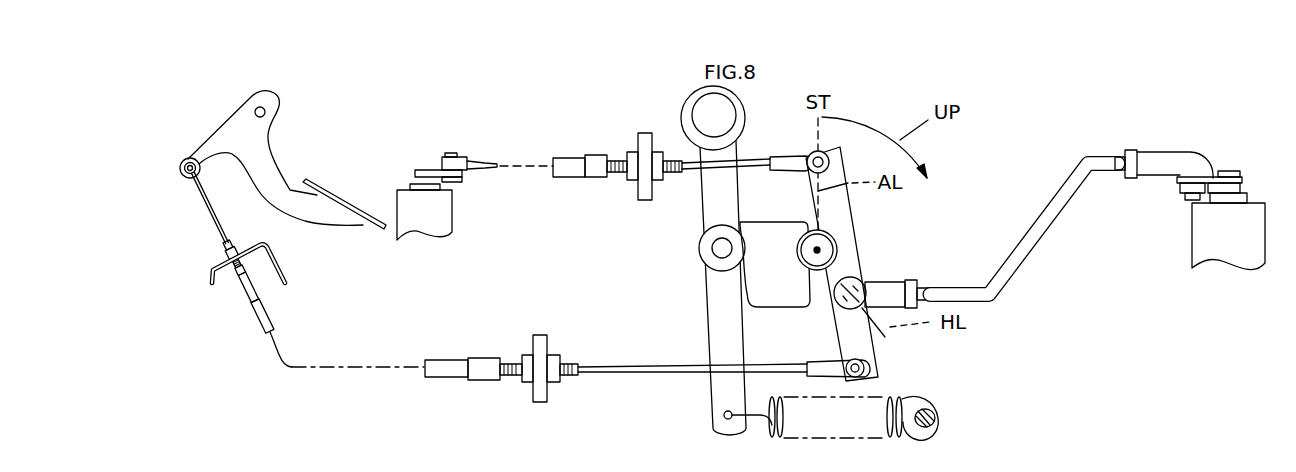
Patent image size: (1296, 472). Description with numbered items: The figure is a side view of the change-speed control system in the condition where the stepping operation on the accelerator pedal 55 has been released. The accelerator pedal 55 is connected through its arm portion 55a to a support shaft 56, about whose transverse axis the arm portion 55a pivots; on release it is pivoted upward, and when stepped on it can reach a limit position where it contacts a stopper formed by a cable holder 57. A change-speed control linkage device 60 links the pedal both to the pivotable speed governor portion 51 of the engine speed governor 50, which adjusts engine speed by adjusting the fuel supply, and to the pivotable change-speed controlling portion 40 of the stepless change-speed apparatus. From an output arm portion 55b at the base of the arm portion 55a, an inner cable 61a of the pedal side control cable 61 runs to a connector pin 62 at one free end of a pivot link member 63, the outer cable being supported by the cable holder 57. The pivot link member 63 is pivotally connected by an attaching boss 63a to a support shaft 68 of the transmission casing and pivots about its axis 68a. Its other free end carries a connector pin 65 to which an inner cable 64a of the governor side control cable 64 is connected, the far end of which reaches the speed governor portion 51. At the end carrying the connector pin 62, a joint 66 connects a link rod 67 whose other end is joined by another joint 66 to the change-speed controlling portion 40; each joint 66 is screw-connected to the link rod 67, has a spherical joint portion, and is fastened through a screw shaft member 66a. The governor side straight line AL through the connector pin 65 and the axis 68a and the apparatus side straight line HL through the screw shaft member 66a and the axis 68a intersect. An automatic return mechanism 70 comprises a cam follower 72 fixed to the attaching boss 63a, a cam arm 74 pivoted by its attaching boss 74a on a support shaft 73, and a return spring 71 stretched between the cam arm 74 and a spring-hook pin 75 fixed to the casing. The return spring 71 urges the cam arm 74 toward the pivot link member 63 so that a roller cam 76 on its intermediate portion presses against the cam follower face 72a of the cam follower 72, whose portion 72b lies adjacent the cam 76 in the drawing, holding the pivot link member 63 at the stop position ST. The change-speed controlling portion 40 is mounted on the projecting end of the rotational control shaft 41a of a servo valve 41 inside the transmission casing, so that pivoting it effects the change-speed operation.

The change-speed controlling portion 40 is at (1215, 177).
The servo valve 41 is at (1198, 255).
The rotational control shaft 41a is at (1230, 173).
The engine speed governor 50 is at (450, 218).
The speed governor portion 51 is at (438, 168).
The accelerator pedal 55 is at (357, 207).
The arm portion 55a is at (268, 165).
The output arm portion 55b is at (203, 148).
The support shaft 56 is at (268, 109).
The cable holder 57 is at (285, 267).
The change-speed control linkage device 60 is at (973, 200).
The pedal side control cable 61 is at (452, 367).
The inner cable 61a is at (668, 372).
The connector pin 62 is at (878, 365).
The pivot link member 63 is at (853, 262).
The attaching boss 63a is at (800, 257).
The governor side control cable 64 is at (572, 167).
The inner cable 64a is at (750, 160).
The connector pin 65 is at (830, 162).
The joint 66 is at (840, 303).
The screw shaft member 66a is at (878, 275).
The link rod 67 is at (1035, 240).
The support shaft 68 is at (803, 240).
The pivot axis 68a is at (840, 232).
The automatic return mechanism 70 is at (662, 261).
The return spring 71 is at (903, 402).
The cam follower 72 is at (800, 302).
The cam follower face 72a is at (740, 275).
The bracket pivot boss 72b is at (742, 244).
The support shaft 73 is at (708, 115).
The cam arm 74 is at (712, 337).
The attaching boss 74a is at (688, 132).
The spring-hook pin 75 is at (943, 415).
The cam 76 is at (702, 243).